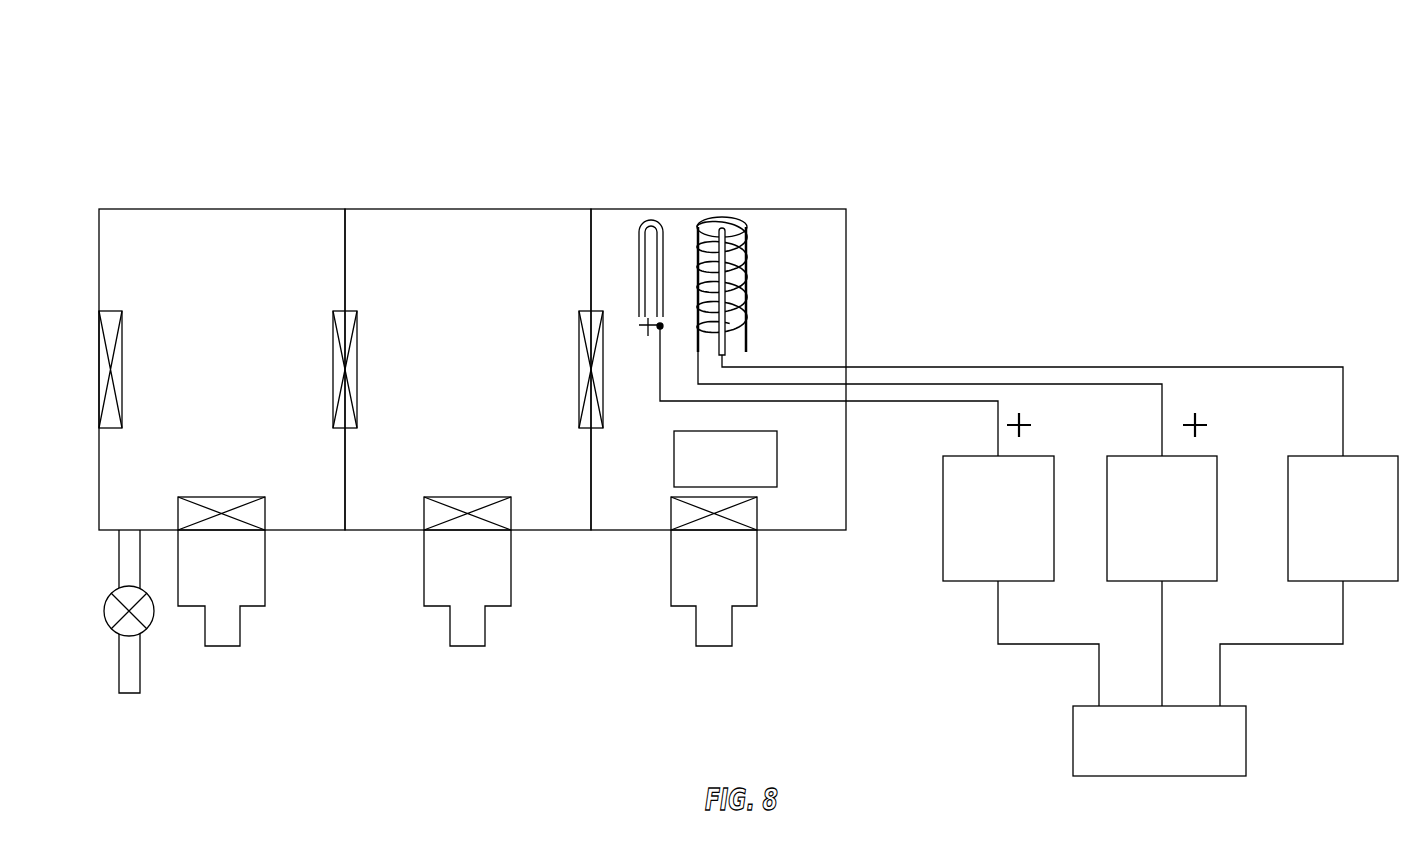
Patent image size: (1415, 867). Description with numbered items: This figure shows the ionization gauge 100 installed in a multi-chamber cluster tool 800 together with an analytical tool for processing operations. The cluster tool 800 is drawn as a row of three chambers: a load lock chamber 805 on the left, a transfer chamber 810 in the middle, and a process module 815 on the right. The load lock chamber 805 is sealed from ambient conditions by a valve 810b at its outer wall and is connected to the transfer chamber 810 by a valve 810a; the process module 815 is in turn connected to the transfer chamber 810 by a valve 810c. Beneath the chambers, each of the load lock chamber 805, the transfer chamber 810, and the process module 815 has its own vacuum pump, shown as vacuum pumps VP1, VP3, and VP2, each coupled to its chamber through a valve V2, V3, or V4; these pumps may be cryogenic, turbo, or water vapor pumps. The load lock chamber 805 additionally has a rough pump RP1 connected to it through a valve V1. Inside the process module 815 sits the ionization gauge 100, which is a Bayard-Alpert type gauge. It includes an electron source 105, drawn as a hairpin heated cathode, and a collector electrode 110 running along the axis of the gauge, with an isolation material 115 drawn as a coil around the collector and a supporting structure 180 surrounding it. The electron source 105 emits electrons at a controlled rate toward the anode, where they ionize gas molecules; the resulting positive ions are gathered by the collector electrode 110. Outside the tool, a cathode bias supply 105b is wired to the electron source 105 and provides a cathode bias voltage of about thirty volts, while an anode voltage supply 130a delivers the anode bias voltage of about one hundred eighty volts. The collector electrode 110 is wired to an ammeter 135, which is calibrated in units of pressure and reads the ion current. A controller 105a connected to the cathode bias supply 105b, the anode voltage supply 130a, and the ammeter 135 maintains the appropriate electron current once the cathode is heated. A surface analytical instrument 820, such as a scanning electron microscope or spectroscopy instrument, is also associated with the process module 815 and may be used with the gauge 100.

The cluster tool 800 is at (251, 91).
The load lock chamber 805 is at (208, 209).
The transfer chamber 810 is at (455, 209).
The process module 815 is at (847, 240).
The valve 810a is at (350, 367).
The valve 810b is at (117, 367).
The valve 810c is at (582, 366).
The surface analytical instrument 820 is at (777, 459).
The electron source 105 is at (638, 229).
The ionization gauge 100 is at (765, 306).
The collector electrode 110 is at (722, 222).
The housing / support 180 is at (738, 226).
The isolation material 115 is at (738, 262).
The controller 105a is at (1073, 742).
The cathode bias supply 105b is at (953, 456).
The anode voltage supply 130a is at (1123, 456).
The ammeter 135 is at (1306, 456).
The valve V1 is at (117, 612).
The valve V2 is at (222, 496).
The valve V3 is at (468, 496).
The valve V4 is at (671, 513).
The vacuum pump VP1 is at (221, 588).
The vacuum pump VP2 is at (714, 588).
The vacuum pump VP3 is at (467, 588).
The rough pump RP1 is at (128, 637).